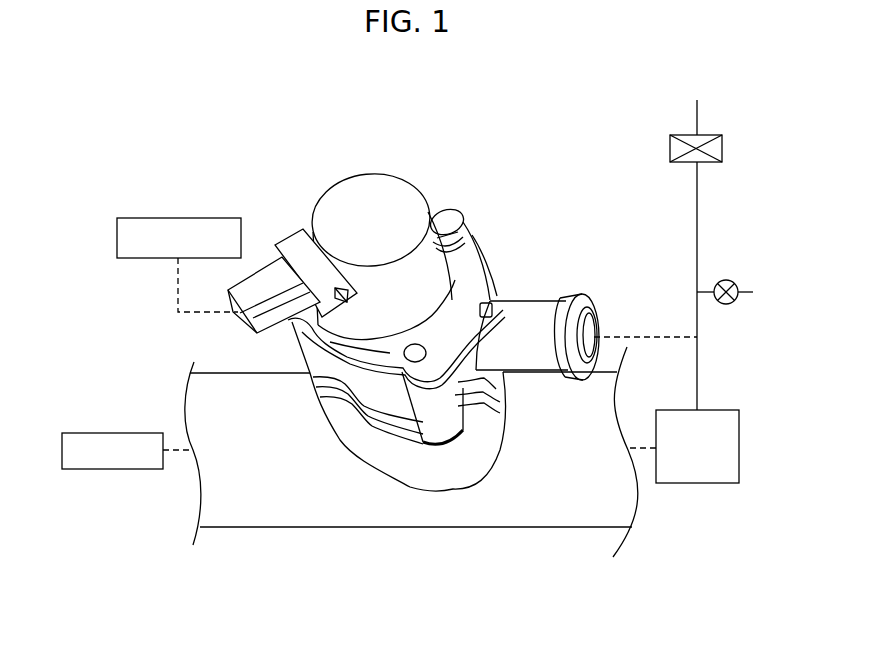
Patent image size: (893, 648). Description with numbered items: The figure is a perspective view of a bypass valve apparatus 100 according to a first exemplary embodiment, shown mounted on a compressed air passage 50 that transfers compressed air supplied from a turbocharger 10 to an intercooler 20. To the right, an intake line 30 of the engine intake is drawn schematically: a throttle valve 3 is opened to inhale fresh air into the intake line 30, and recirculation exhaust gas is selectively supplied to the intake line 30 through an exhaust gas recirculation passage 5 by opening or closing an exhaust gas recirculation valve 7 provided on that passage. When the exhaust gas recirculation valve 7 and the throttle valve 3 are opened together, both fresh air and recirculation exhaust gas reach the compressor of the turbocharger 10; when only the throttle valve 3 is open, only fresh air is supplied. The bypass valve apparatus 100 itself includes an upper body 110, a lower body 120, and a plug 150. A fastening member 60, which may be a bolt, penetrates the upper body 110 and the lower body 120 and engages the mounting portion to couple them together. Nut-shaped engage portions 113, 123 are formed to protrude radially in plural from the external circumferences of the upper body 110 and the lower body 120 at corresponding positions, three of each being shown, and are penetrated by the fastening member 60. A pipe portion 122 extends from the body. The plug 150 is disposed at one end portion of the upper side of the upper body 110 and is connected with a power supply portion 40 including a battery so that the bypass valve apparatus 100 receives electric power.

The bypass valve apparatus 100 is at (399, 172).
The upper body 110 is at (402, 212).
The fastening member 60 is at (452, 217).
The plug 150 is at (269, 292).
The power supply portion 40 is at (178, 218).
The engage portion 123 is at (477, 368).
The outlet pipe 122 is at (545, 299).
The throttle valve 3 is at (670, 148).
The intake line 30 is at (697, 210).
The exhaust gas recirculation valve 7 is at (726, 280).
The exhaust gas recirculation passage 5 is at (750, 291).
The turbocharger 10 is at (728, 410).
The intercooler 20 is at (121, 433).
The engage portion 113 is at (350, 342).
The lower body 120 is at (390, 397).
The compressed air passage 50 is at (447, 512).